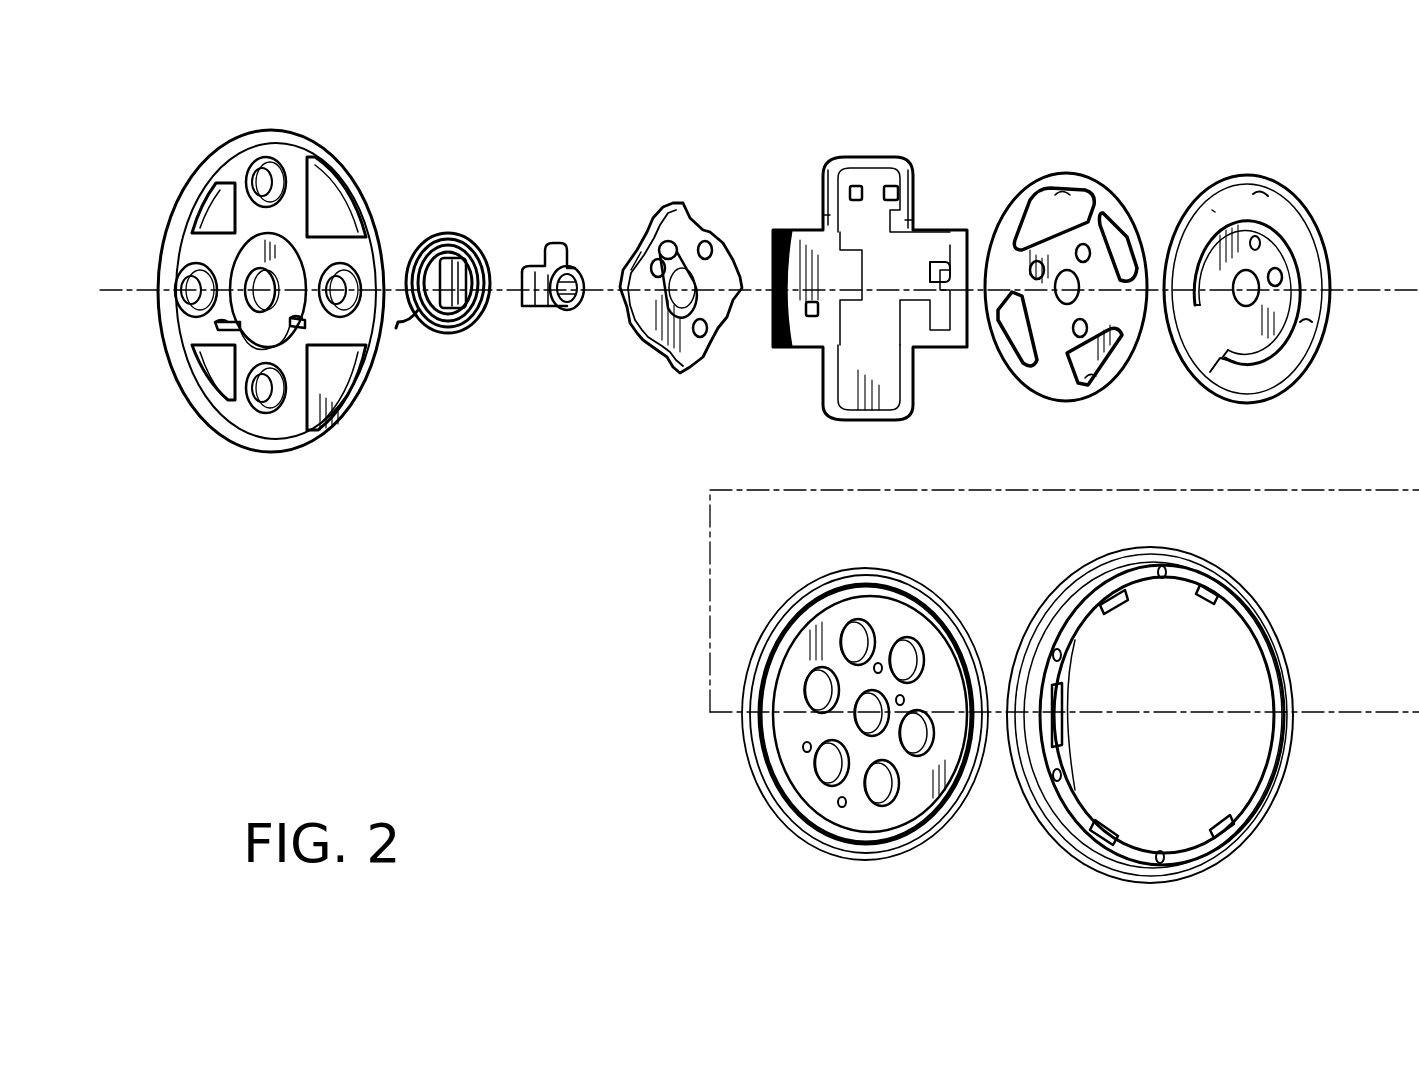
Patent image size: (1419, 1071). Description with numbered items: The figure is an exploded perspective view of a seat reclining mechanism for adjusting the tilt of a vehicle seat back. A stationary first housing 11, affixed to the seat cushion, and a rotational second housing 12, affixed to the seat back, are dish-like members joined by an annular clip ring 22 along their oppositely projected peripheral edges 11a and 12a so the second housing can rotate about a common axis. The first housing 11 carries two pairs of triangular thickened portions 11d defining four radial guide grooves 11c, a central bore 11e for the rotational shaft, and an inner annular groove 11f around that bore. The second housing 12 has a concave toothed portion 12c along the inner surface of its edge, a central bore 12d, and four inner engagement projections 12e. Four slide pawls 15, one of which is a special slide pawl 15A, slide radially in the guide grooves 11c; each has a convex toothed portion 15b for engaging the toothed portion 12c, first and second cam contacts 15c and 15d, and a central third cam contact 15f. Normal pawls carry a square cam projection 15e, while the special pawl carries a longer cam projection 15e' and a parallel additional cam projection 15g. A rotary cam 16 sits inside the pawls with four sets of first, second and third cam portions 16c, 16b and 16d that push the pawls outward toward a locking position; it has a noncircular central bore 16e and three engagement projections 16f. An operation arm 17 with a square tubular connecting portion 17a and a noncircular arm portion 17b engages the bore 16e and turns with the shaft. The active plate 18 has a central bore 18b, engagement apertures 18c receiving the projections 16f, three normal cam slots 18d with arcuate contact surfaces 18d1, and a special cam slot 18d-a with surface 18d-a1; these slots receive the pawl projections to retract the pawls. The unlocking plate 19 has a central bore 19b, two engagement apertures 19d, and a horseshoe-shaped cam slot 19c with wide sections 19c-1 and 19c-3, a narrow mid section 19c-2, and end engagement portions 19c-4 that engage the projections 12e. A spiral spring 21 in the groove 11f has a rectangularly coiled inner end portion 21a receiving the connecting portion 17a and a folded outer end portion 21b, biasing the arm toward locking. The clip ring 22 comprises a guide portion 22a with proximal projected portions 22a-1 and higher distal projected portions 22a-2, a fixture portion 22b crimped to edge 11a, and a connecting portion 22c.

The first housing 11 is at (213, 138).
The peripheral edge 11a is at (338, 165).
The guide grooves 11c is at (300, 170).
The triangular thickened portions 11d is at (222, 212).
The central circular bore 11e is at (243, 300).
The inner annular groove 11f is at (298, 345).
The second housing 12 is at (892, 568).
The peripheral edge 12a is at (762, 752).
The concave toothed portion 12c is at (793, 628).
The central circular bore 12d is at (875, 722).
The inner engagement projections 12e is at (880, 665).
The slide pawls 15 is at (816, 332).
The special slide pawl 15A is at (915, 188).
The convex toothed portion 15b is at (832, 165).
The first cam contact 15c is at (822, 212).
The second cam contact 15d is at (908, 225).
The cam projection 15e is at (784, 348).
The cam projection 15e' is at (869, 149).
The third cam contact 15f is at (893, 310).
The additional cam projection 15g is at (898, 186).
The rotary cam 16 is at (640, 356).
The second cam portion 16b is at (700, 225).
The first cam portion 16c is at (642, 240).
The third cam portion 16d is at (668, 205).
The noncircular central bore 16e is at (705, 302).
The engagement projections 16f is at (686, 342).
The operation arm 17 is at (534, 243).
The square tubular connecting portion 17a is at (532, 310).
The noncircular arm portion 17b is at (562, 262).
The active plate 18 is at (1081, 172).
The central bore 18b is at (1066, 305).
The engagement apertures 18c is at (1088, 235).
The normal cam slots 18d is at (1090, 240).
The special cam slot 18d-a is at (1040, 200).
The special cam contact surface 18d-a1 is at (1066, 188).
The normal cam contact surface 18d1 is at (1086, 385).
The unlocking plate 19 is at (1244, 173).
The central bore 19b is at (1246, 306).
The cam slot 19c is at (1258, 195).
The first wide section 19c-1 is at (1212, 210).
The narrow mid section 19c-2 is at (1290, 222).
The second wide section 19c-3 is at (1306, 328).
The end engagement portion 19c-4 is at (1215, 375).
The engagement apertures 19d is at (1282, 275).
The spiral spring 21 is at (448, 228).
The inner end portion 21a is at (458, 332).
The outer end portion 21b is at (404, 330).
The clip ring 22 is at (1235, 570).
The guide portion 22a is at (1122, 582).
The proximal projected portions 22a-1 is at (1104, 606).
The distal projected portions 22a-2 is at (1064, 658).
The fixture portion 22b is at (1280, 658).
The connecting portion 22c is at (1052, 612).